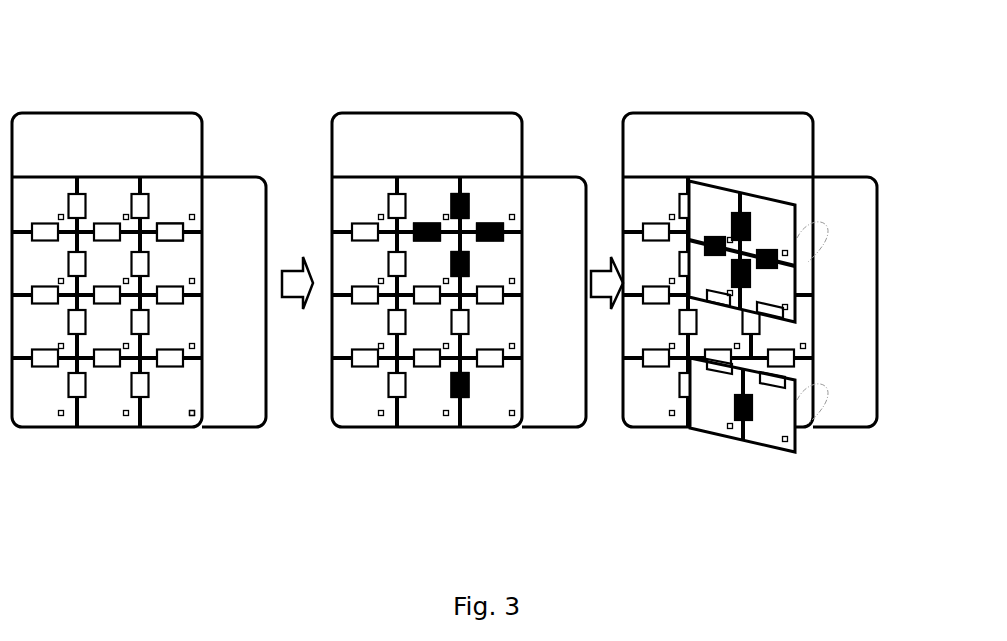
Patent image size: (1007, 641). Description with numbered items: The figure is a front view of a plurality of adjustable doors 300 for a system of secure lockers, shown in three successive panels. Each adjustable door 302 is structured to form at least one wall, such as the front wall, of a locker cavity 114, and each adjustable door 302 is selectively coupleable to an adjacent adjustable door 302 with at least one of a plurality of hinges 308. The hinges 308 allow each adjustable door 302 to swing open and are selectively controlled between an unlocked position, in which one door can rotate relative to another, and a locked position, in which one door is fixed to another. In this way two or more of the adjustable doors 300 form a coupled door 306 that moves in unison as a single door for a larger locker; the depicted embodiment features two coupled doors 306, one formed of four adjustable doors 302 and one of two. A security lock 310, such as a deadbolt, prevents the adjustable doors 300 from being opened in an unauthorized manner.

The plurality of adjustable doors 300 is at (71, 84).
The adjustable door 302 is at (195, 203).
The plurality of hinges 308 is at (188, 236).
The security lock 310 is at (199, 413).
The coupled door 306 is at (783, 208).
The locker cavity 114 is at (797, 192).